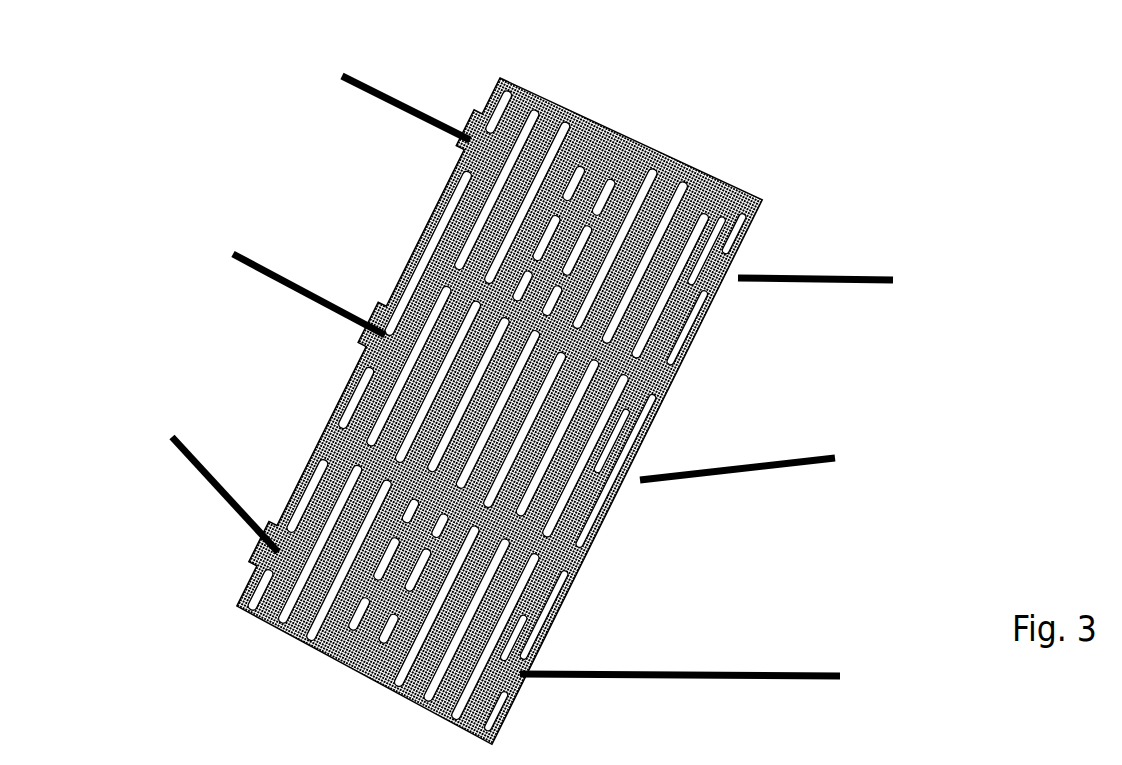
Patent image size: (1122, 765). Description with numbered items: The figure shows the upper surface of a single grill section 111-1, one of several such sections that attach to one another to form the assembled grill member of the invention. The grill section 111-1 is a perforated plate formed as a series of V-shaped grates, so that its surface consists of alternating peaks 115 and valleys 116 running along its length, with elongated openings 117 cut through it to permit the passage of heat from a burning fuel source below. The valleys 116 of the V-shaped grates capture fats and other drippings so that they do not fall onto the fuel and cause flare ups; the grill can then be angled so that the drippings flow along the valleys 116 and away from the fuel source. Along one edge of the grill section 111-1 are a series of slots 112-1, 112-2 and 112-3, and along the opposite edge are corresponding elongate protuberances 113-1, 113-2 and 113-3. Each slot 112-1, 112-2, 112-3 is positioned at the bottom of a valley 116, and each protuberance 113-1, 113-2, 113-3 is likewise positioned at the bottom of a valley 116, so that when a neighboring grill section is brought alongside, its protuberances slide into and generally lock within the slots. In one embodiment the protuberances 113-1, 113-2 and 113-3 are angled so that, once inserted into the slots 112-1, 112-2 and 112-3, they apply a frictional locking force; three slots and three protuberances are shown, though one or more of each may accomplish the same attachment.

The grill section 111-1 is at (775, 178).
The slot 112-1 is at (707, 246).
The slot 112-2 is at (622, 436).
The slot 112-3 is at (522, 644).
The elongate protuberance 113-1 is at (579, 161).
The elongate protuberance 113-2 is at (491, 358).
The elongate protuberance 113-3 is at (459, 543).
The peaks 115 is at (651, 147).
The valleys 116 is at (458, 727).
The openings 117 is at (430, 395).